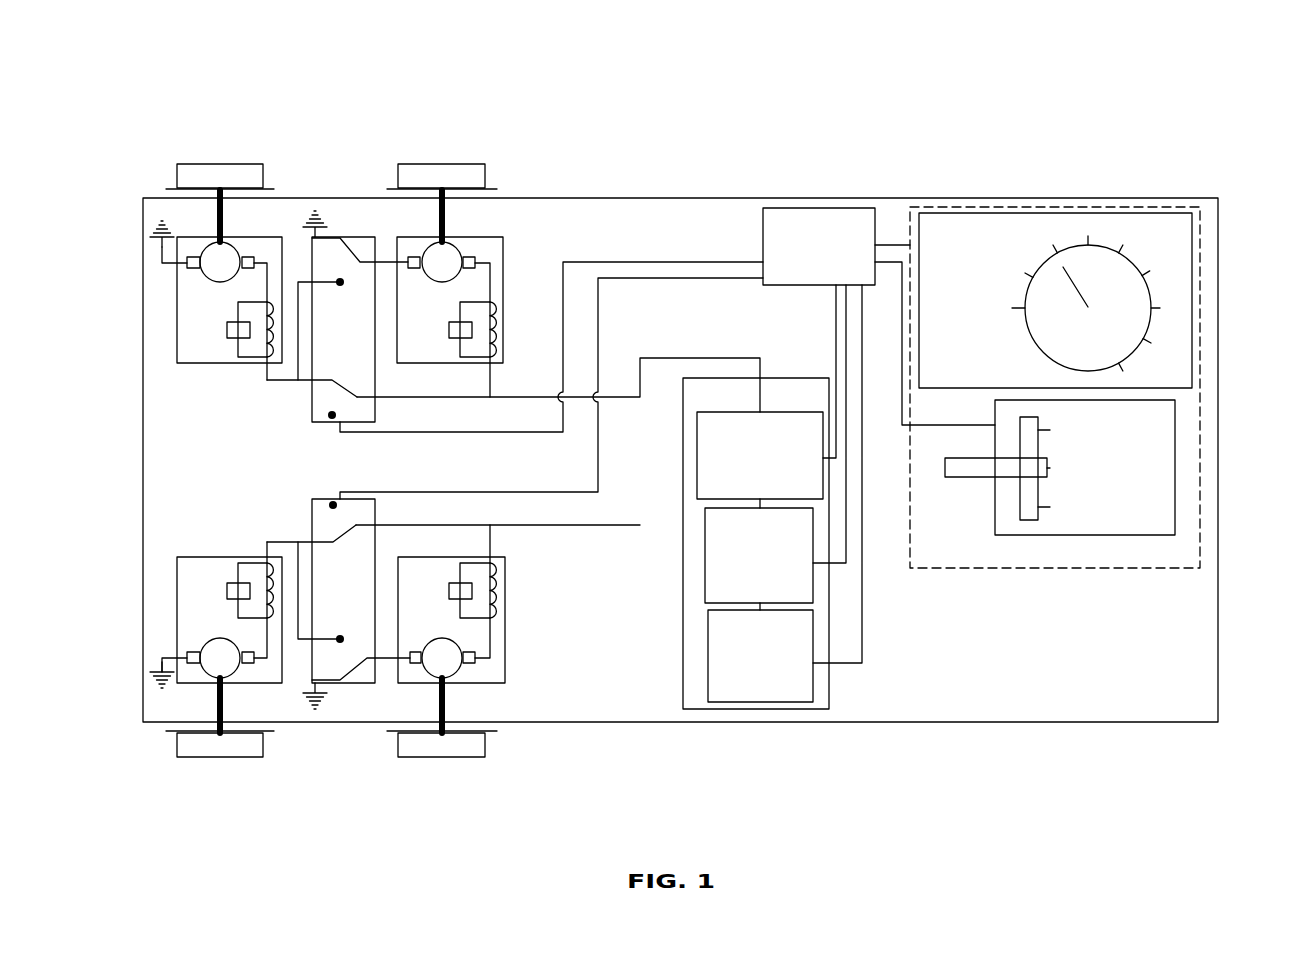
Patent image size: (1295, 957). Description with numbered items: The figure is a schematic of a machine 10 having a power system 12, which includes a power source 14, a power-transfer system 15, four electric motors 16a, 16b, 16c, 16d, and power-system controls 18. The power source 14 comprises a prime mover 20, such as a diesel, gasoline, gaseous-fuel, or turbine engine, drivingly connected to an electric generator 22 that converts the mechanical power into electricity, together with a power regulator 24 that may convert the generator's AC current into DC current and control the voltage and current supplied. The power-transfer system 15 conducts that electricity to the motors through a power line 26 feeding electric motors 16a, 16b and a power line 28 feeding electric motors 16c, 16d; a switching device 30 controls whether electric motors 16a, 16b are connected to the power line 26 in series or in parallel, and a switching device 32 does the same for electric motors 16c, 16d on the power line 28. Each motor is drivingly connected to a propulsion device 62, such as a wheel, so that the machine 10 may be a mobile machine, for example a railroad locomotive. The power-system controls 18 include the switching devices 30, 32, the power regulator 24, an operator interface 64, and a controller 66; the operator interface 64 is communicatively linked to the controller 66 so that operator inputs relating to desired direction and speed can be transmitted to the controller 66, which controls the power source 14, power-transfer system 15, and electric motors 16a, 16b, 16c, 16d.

The machine 10 is at (763, 80).
The power system 12 is at (590, 170).
The power source 14 is at (829, 638).
The power-transfer system 15 is at (597, 550).
The electric motor 16a is at (507, 257).
The electric motor 16b is at (279, 231).
The electric motor 16c is at (505, 685).
The electric motor 16d is at (265, 685).
The power-system controls 18 is at (753, 348).
The prime mover 20 is at (760, 656).
The electric generator 22 is at (759, 559).
The power regulator 24 is at (760, 460).
The power line 26 is at (520, 397).
The power line 28 is at (540, 527).
The switching device 30 is at (345, 235).
The switching device 32 is at (340, 685).
The propulsion devices 62 is at (217, 163).
The operator interface 64 is at (1200, 273).
The controller 66 is at (879, 316).